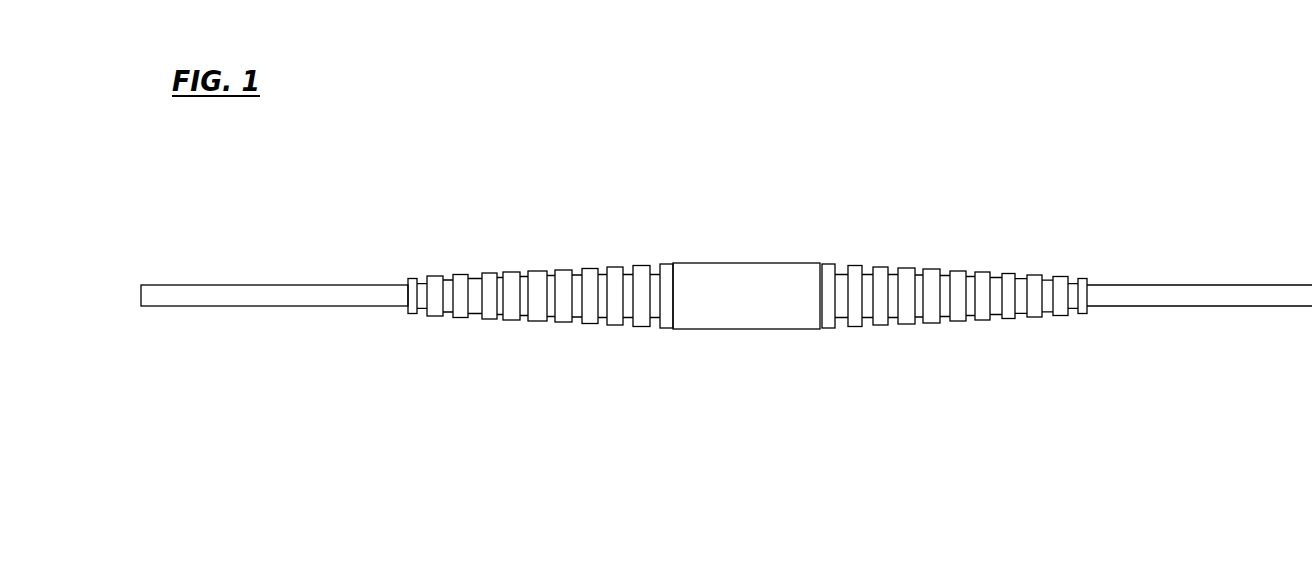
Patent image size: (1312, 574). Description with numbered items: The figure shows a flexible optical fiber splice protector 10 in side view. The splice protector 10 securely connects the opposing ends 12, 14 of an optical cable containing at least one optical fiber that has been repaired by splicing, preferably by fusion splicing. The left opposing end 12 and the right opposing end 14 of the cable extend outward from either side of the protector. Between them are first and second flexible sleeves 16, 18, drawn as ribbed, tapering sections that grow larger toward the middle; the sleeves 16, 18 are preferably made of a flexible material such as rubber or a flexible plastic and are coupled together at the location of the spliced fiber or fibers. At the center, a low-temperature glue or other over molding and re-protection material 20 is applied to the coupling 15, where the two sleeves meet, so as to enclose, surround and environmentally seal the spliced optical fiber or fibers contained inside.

The fiber optic splice protector 10 is at (1033, 82).
The opposing end of optical cable 12 is at (283, 293).
The opposing end of optical cable 14 is at (1158, 294).
The coupling 15 is at (746, 310).
The first flexible sleeve 16 is at (561, 272).
The second flexible sleeve 18 is at (905, 295).
The over molding and re-protection material 20 is at (735, 267).